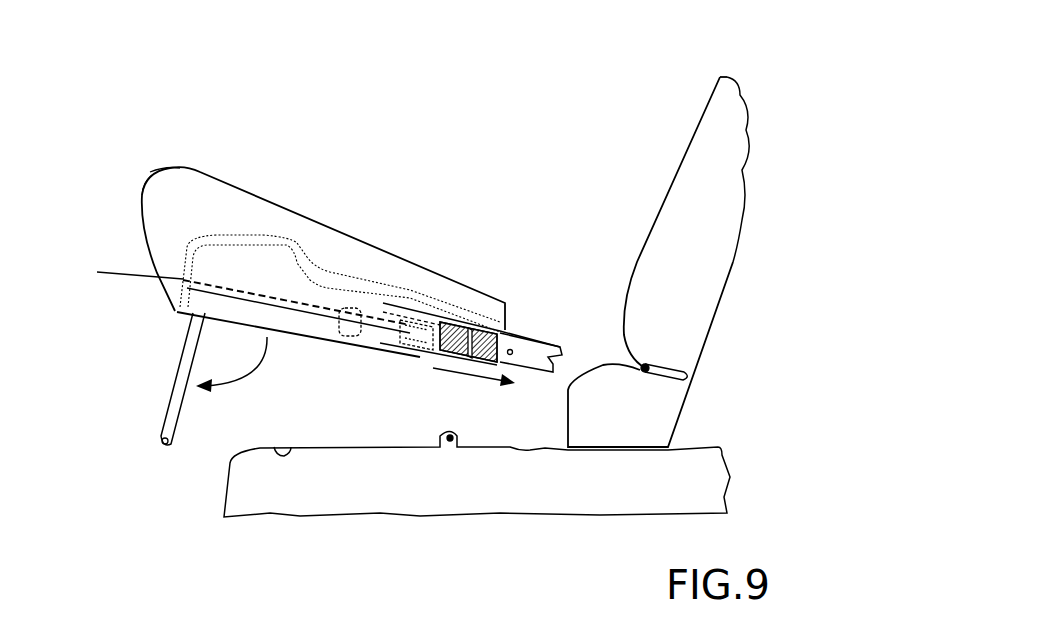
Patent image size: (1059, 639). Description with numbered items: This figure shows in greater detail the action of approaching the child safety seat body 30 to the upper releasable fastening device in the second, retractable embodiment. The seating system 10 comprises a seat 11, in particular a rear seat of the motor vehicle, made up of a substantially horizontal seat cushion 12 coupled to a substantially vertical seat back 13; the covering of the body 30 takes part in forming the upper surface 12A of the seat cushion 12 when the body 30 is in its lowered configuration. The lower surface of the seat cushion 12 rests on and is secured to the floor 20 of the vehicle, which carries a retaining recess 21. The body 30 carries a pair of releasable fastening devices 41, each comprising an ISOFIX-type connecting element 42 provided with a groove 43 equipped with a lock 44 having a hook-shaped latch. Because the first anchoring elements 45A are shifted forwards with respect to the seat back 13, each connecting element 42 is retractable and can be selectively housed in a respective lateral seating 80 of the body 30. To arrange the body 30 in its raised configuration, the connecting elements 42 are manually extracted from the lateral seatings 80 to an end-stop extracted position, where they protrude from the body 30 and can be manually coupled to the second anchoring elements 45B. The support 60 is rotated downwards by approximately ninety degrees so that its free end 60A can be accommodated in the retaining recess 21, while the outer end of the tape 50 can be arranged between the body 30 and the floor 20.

The seating system 10 is at (592, 186).
The seat 11 is at (774, 103).
The seat cushion 12 is at (325, 210).
The upper surface of the seat cushion 12A is at (207, 177).
The seat back 13 is at (732, 240).
The floor 20 is at (413, 510).
The retaining recess 21 is at (257, 450).
The body 30 is at (160, 178).
The releasable fastening device 41 is at (419, 356).
The connecting element 42 is at (512, 328).
The groove 43 is at (533, 341).
The lock 44 is at (545, 357).
The first anchoring element 45A is at (450, 443).
The second anchoring element 45B is at (645, 368).
The tape 50 is at (232, 298).
The support 60 is at (190, 370).
The free end of the support 60A is at (165, 446).
The lateral seating 80 is at (372, 330).